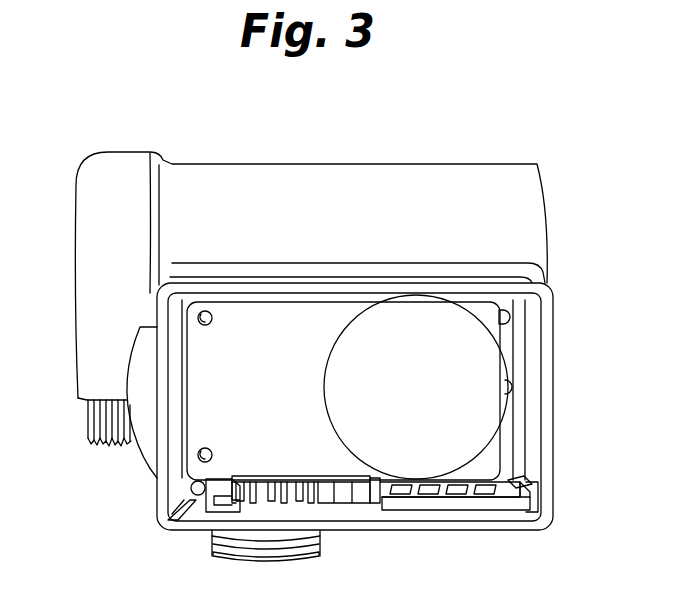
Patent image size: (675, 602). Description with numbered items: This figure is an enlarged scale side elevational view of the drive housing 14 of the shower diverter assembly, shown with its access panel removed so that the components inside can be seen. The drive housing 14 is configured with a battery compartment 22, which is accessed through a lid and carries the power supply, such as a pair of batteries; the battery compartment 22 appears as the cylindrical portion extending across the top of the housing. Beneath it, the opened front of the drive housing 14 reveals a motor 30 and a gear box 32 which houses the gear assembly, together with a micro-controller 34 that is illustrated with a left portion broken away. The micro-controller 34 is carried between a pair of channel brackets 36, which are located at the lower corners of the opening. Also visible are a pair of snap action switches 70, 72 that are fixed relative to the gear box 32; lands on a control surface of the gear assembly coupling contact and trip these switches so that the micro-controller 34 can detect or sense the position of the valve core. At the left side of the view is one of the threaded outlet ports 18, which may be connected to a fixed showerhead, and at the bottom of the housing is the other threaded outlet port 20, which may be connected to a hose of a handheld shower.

The drive housing 14 is at (555, 375).
The threaded outlet port 18 is at (89, 419).
The threaded outlet port 20 is at (293, 565).
The battery compartment 22 is at (300, 183).
The motor 30 is at (432, 402).
The gear box 32 is at (262, 393).
The micro-controller 34 is at (470, 503).
The channel brackets 36 is at (215, 494).
The snap action switch 70 is at (265, 476).
The snap action switch 72 is at (298, 482).